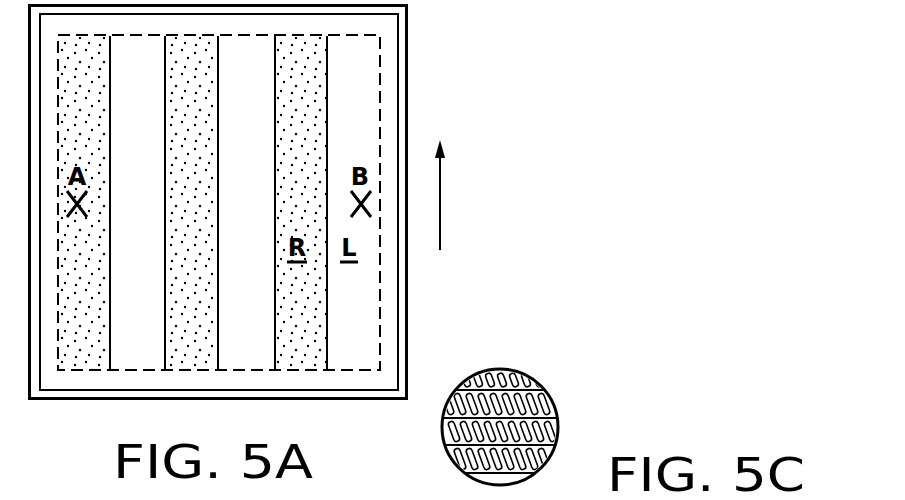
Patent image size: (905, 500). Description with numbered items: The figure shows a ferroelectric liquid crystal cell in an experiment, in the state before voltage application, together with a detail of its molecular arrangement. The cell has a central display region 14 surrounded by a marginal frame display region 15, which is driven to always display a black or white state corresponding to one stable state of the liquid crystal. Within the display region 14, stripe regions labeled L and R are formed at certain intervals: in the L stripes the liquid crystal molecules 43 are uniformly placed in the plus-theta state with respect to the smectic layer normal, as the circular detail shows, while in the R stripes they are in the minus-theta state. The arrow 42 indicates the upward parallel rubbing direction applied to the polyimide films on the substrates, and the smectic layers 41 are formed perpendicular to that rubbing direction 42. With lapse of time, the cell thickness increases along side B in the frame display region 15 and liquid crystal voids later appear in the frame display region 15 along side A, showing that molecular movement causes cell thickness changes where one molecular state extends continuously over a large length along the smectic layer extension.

In FIG. 5A, the display region 14 is at (368, 85).
In FIG. 5A, the frame display region 15 is at (392, 40).
In FIG. 5C, the smectic layers 41 is at (528, 410).
In FIG. 5A, the rubbing direction 42 is at (440, 200).
In FIG. 5C, the liquid crystal molecules 43 is at (543, 428).